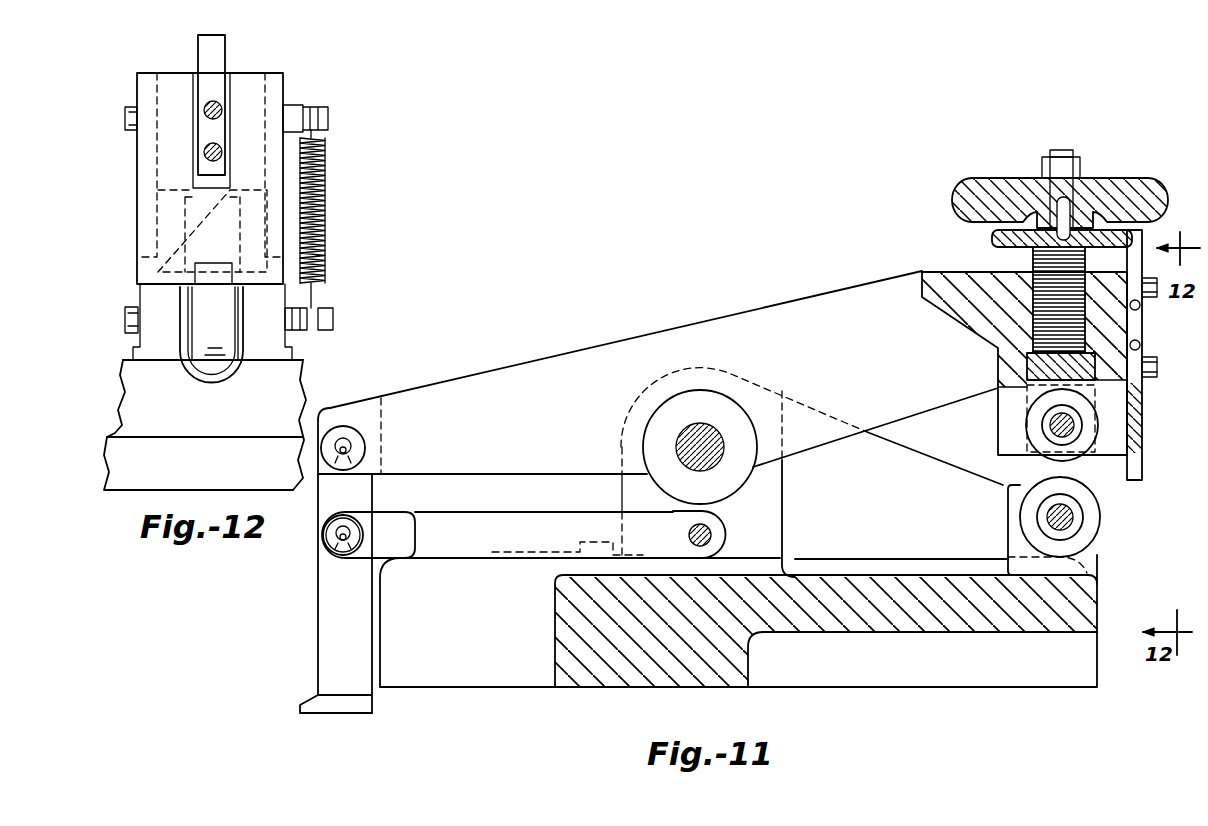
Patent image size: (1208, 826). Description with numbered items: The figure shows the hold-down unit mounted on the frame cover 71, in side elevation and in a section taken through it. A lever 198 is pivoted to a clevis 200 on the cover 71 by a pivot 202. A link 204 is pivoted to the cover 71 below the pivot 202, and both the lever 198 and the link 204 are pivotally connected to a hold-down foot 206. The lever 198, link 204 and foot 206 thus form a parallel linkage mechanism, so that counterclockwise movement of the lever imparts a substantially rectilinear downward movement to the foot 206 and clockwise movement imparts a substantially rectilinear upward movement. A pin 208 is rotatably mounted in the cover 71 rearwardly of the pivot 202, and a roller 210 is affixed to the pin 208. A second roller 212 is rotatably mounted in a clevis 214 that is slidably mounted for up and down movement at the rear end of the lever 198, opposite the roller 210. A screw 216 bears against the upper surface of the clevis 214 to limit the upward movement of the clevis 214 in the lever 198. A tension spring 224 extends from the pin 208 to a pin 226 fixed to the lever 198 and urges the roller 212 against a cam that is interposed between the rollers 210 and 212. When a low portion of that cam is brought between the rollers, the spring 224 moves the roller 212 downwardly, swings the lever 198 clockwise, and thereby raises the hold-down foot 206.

In FIG. 11, the frame cover 71 is at (625, 672).
In FIG. 12, the lever 198 is at (142, 88).
In FIG. 11, the lever 198 is at (783, 323).
In FIG. 11, the clevis 200 is at (770, 492).
In FIG. 11, the pivot 202 is at (697, 436).
In FIG. 11, the link 204 is at (460, 545).
In FIG. 11, the hold-down foot 206 is at (333, 621).
In FIG. 12, the pin 208 is at (127, 318).
In FIG. 11, the pin 208 is at (1072, 515).
In FIG. 12, the roller 210 is at (225, 343).
In FIG. 11, the roller 210 is at (1088, 530).
In FIG. 12, the roller 212 is at (205, 228).
In FIG. 11, the roller 212 is at (1032, 427).
In FIG. 11, the clevis 214 is at (1083, 368).
In FIG. 11, the screw 216 is at (1043, 305).
In FIG. 12, the tension spring 224 is at (327, 180).
In FIG. 12, the pin 226 is at (290, 110).